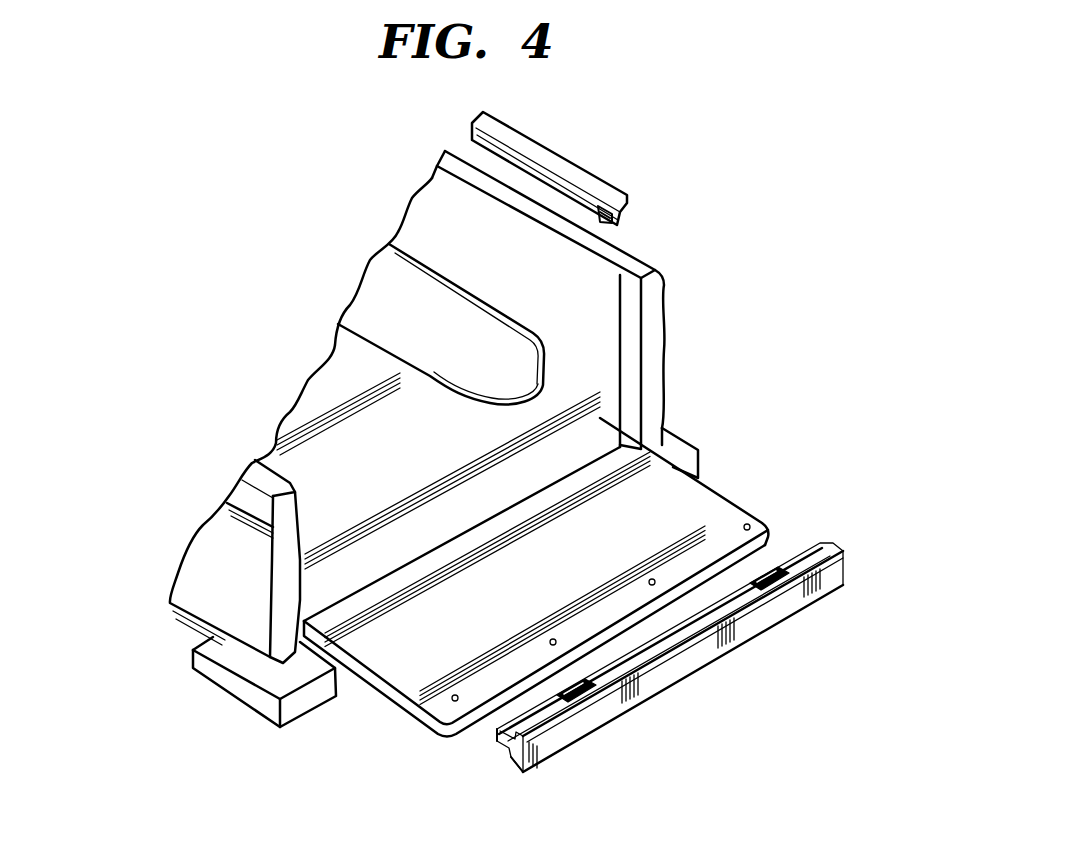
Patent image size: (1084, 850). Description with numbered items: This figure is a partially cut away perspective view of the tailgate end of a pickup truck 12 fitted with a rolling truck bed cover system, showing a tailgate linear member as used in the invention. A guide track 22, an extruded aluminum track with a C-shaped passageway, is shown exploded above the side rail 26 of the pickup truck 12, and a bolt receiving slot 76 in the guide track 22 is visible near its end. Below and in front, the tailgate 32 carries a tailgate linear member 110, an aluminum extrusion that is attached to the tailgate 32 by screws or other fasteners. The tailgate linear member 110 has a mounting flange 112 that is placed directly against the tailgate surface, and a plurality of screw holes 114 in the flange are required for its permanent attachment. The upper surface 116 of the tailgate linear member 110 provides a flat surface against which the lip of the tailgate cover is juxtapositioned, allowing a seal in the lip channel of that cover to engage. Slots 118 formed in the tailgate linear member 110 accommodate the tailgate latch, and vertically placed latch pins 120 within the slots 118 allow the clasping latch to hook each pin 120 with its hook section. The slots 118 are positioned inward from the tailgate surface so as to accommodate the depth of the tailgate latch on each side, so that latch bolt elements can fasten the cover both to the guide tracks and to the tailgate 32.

The pickup truck 12 is at (253, 585).
The second guide track 22 is at (597, 182).
The side rail 26 is at (643, 270).
The tailgate 32 is at (704, 506).
The bolt receiving slot 76 is at (603, 219).
The tailgate linear member 110 is at (843, 560).
The mounting flange 112 is at (495, 737).
The screw holes 114 is at (744, 527).
The upper surface 116 is at (538, 770).
The slots 118 is at (568, 706).
The latch pins 120 is at (573, 684).